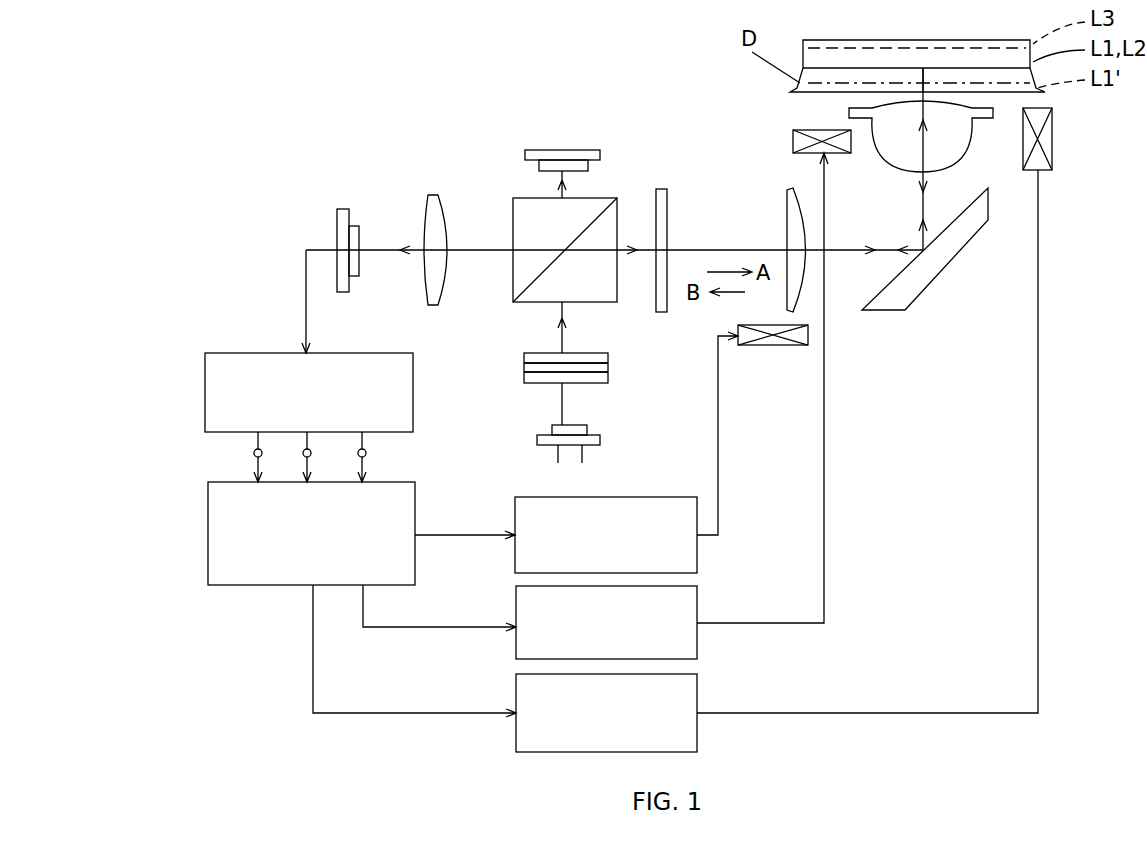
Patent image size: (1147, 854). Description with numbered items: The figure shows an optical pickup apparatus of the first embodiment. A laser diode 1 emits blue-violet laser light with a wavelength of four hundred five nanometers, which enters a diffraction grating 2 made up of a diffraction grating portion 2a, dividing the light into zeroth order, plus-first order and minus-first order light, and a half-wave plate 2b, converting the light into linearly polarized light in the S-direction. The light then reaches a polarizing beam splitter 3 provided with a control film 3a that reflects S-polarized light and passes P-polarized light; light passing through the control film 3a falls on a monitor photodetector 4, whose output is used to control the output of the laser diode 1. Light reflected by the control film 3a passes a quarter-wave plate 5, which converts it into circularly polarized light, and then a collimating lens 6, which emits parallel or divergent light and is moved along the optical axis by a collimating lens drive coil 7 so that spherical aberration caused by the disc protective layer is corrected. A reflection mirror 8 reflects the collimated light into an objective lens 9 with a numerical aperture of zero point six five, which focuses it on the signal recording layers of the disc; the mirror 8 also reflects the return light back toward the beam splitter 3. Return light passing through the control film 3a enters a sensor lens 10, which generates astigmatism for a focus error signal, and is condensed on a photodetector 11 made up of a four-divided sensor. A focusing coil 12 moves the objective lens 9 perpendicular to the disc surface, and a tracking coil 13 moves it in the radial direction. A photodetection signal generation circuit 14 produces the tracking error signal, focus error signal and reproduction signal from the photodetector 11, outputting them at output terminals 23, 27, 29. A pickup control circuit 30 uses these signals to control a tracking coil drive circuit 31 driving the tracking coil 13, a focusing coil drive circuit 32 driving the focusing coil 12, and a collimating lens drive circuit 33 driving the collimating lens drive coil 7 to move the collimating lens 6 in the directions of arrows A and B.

The laser diode 1 is at (610, 435).
The diffraction grating 2 is at (618, 367).
The diffraction grating portion 2a is at (527, 371).
The half-wave plate 2b is at (527, 356).
The polarizing beam splitter 3 is at (518, 205).
The control film 3a is at (604, 213).
The monitor photodetector 4 is at (580, 150).
The quarter-wave plate 5 is at (668, 200).
The collimating lens 6 is at (790, 200).
The collimating lens drive coil 7 is at (766, 347).
The reflection mirror 8 is at (935, 285).
The objective lens 9 is at (962, 135).
The sensor lens 10 is at (432, 200).
The photodetector 11 is at (341, 208).
The focusing coil 12 is at (1055, 137).
The tracking coil 13 is at (796, 142).
The photodetection signal generation circuit 14 is at (213, 358).
The output terminal 23 is at (368, 453).
The output terminal 27 is at (311, 450).
The output terminal 29 is at (254, 453).
The pickup control circuit 30 is at (225, 580).
The tracking coil drive circuit 31 is at (700, 646).
The focusing coil drive circuit 32 is at (700, 753).
The collimating lens drive circuit 33 is at (700, 557).